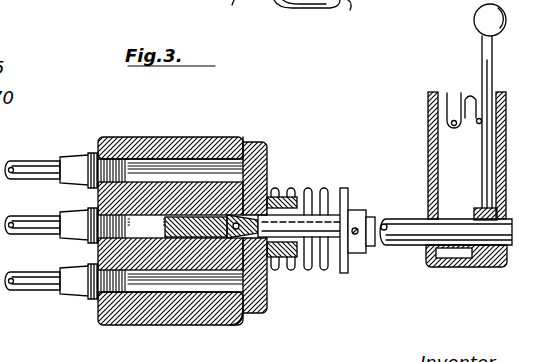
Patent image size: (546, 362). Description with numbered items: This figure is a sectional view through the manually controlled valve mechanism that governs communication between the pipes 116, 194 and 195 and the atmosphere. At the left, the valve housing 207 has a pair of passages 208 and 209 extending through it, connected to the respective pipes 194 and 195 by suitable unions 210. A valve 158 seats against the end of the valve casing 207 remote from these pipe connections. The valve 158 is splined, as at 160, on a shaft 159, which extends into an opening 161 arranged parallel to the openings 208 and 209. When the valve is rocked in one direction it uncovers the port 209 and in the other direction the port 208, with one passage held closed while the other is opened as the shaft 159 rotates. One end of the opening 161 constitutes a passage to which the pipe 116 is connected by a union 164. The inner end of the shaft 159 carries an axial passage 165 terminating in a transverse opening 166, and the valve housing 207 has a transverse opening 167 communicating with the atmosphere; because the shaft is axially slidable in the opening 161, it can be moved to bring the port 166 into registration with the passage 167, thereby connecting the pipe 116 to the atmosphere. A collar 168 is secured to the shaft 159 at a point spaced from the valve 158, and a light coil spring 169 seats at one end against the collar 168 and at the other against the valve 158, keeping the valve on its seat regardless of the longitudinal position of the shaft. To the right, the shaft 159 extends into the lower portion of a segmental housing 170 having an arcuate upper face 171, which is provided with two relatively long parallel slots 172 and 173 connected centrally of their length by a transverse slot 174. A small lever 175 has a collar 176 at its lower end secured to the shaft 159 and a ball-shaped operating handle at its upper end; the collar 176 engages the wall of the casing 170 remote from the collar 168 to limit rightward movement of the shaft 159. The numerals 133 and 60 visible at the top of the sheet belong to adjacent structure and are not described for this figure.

The partial element 133 is at (249, 10).
The partial element 60 is at (315, 16).
The passage 209 is at (190, 172).
The passage 208 is at (163, 283).
The valve housing 207 is at (200, 322).
The pipe 195 is at (35, 160).
The pipe 116 is at (25, 221).
The pipe 194 is at (30, 281).
The union 210 is at (77, 157).
The union 164 is at (72, 220).
The axial passage 165 is at (172, 225).
The transverse opening 167 is at (203, 240).
The opening 161 is at (238, 243).
The valve 158 is at (267, 153).
The transverse opening 166 is at (263, 280).
The spline 160 is at (275, 197).
The coil spring 169 is at (312, 189).
The shaft 159 is at (312, 271).
The collar 168 is at (358, 210).
The segmental housing 170 is at (457, 267).
The slot 173 is at (486, 100).
The transverse slot 174 is at (484, 30).
The lever 175 is at (482, 165).
The collar 176 is at (482, 208).
The slot 172 is at (451, 100).
The arcuate upper face 171 is at (464, 100).